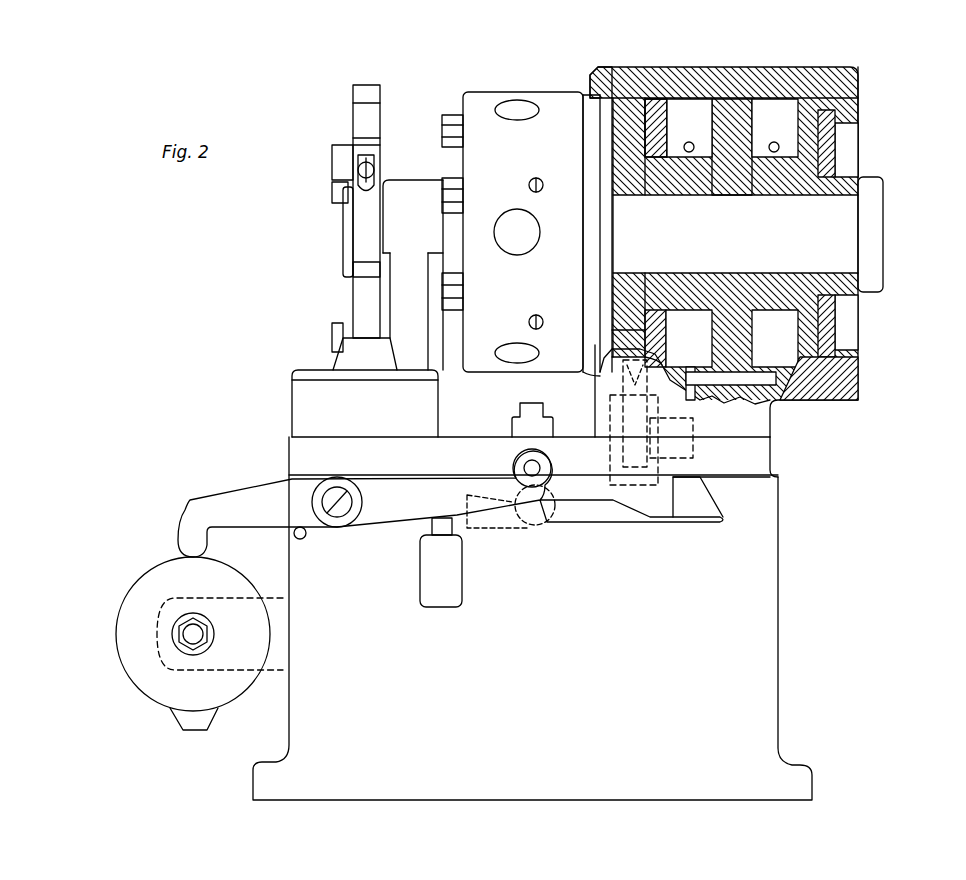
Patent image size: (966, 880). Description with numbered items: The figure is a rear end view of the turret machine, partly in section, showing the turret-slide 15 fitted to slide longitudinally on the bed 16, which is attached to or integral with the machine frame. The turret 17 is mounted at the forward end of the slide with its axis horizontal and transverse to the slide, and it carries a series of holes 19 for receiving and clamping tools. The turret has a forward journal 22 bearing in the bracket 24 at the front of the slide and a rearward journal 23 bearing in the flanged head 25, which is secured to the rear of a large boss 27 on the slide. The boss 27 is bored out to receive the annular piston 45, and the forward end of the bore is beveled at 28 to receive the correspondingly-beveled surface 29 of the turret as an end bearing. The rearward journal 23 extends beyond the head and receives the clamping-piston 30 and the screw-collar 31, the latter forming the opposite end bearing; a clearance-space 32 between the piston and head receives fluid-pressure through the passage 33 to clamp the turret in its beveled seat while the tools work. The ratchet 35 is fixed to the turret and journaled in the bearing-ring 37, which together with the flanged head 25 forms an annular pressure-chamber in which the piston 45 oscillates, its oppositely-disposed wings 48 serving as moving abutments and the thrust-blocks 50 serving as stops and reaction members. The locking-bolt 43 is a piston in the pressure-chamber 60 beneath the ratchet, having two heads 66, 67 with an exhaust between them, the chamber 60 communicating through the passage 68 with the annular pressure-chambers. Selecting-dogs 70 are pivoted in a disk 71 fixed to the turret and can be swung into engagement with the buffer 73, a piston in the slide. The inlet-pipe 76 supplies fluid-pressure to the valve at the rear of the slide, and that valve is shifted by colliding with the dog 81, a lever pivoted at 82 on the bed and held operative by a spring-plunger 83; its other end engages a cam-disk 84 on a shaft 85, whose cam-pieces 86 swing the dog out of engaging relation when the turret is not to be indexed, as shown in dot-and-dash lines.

The turret-slide 15 is at (770, 462).
The bed 16 is at (532, 618).
The turret 17 is at (487, 92).
The holes 19 is at (510, 252).
The journal 22 is at (408, 190).
The rearward journal 23 is at (735, 234).
The bracket 24 is at (413, 365).
The flanged head 25 is at (858, 90).
The boss 27 is at (718, 67).
The beveled seat 28 is at (598, 80).
The beveled surface 29 is at (598, 290).
The clamping-piston 30 is at (840, 148).
The screw-collar 31 is at (875, 258).
The clearance-space 32 is at (840, 318).
The passage 33 is at (808, 360).
The ratchet 35 is at (612, 334).
The bearing-ring 37 is at (657, 98).
The locking-bolt 43 is at (610, 380).
The annular piston 45 is at (735, 108).
The wings 48 is at (732, 128).
The thrust-blocks 50 is at (732, 338).
The pressure-chamber 60 is at (610, 412).
The head of locking-bolt 66 is at (625, 432).
The head of locking-bolt 67 is at (618, 470).
The passage 68 is at (770, 402).
The selecting-dogs 70 is at (345, 162).
The disk 71 is at (360, 216).
The buffer 73 is at (360, 306).
The inlet-pipe 76 is at (522, 410).
The dog 81 is at (439, 492).
The pivot 82 is at (337, 512).
The spring-plunger 83 is at (445, 525).
The cam-disk 84 is at (147, 582).
The shaft 85 is at (192, 636).
The cam-pieces 86 is at (195, 725).